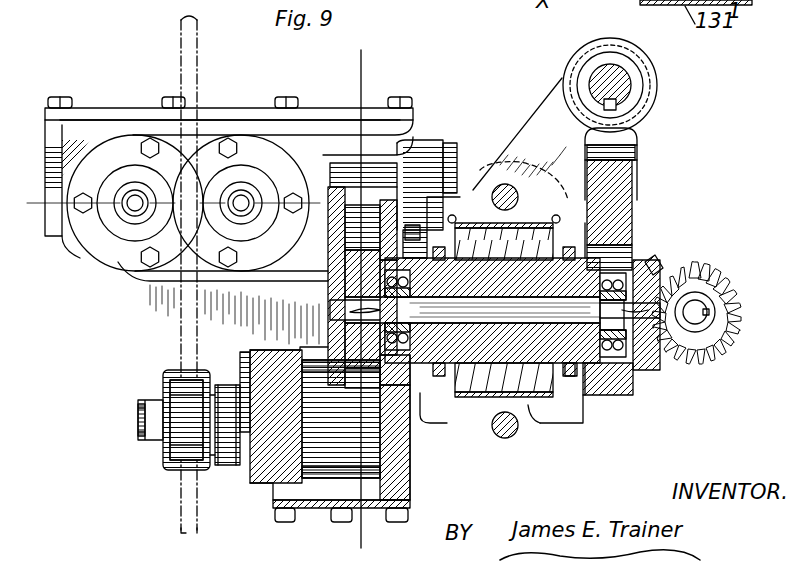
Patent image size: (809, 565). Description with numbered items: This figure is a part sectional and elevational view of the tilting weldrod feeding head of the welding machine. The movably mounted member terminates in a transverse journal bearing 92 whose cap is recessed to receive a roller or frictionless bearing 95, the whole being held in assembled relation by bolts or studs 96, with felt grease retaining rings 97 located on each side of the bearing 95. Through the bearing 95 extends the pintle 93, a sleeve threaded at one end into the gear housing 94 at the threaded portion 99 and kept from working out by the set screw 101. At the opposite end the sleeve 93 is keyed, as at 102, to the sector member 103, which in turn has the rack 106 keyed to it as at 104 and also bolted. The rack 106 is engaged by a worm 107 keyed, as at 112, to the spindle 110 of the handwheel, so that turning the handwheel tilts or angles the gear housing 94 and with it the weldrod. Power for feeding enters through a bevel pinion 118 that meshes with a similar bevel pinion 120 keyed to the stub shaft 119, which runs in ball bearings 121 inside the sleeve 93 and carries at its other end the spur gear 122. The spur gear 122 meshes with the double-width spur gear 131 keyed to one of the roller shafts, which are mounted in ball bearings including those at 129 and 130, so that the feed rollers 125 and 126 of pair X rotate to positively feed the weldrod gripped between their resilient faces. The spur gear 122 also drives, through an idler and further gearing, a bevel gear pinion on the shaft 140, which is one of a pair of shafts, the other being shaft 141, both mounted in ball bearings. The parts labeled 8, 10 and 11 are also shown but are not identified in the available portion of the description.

The section line 8- 8 is at (363, 65).
The section line 10- 10 is at (33, 200).
The section line 11- 11 is at (87, 418).
The transverse journal bearing 92 is at (583, 423).
The pintle 93 is at (540, 423).
The gear housing 94 is at (318, 143).
The roller or frictionless bearing 95 is at (507, 238).
The bolts or studs 96 is at (505, 184).
The grease retaining rings 97 is at (427, 393).
The threaded portion 99 is at (405, 372).
The set screw 101 is at (416, 226).
The key 102 is at (626, 258).
The sector member 103 is at (630, 206).
The key 104 is at (627, 155).
The rack 106 is at (638, 137).
The worm 107 is at (657, 81).
The spindle 110 is at (620, 76).
The key 112 is at (617, 105).
The bevel pinion 118 is at (728, 282).
The stub shaft 119 is at (510, 323).
The bevel pinion 120 is at (662, 268).
The ball bearings 121 is at (618, 353).
The spur gear 122 is at (350, 266).
The feed roller 125 is at (165, 440).
The feed roller 126 is at (167, 462).
The ball bearing 129 is at (622, 0).
The ball bearing 130 is at (718, 9).
The spur gear 131 is at (330, 478).
The shaft 140 is at (240, 206).
The shaft 141 is at (133, 206).